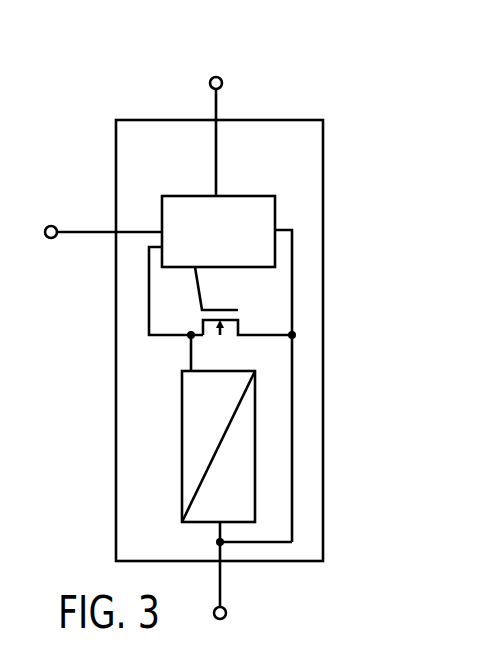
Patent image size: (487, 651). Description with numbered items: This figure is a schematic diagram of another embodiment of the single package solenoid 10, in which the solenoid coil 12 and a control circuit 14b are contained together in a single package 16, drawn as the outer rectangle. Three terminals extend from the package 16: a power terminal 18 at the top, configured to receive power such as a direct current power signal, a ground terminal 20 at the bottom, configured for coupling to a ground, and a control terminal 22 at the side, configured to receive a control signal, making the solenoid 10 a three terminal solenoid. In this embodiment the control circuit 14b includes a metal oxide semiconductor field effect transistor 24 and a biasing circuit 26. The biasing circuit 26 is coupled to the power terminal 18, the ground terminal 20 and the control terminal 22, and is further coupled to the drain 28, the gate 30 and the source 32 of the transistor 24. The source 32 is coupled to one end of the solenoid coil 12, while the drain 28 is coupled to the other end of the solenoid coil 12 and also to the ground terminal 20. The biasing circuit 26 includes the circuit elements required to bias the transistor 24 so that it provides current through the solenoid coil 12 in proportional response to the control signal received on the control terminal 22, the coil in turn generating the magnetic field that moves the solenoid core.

The single package solenoid 10 is at (129, 74).
The solenoid coil 12 is at (255, 405).
The control circuit 14b is at (351, 136).
The single package 16 is at (268, 120).
The power terminal 18 is at (222, 97).
The ground terminal 20 is at (222, 585).
The control terminal 22 is at (85, 230).
The metal oxide semiconductor field effect transistor 24 is at (240, 322).
The biasing circuit 26 is at (275, 212).
The drain 28 is at (293, 250).
The gate 30 is at (205, 286).
The source 32 is at (148, 290).